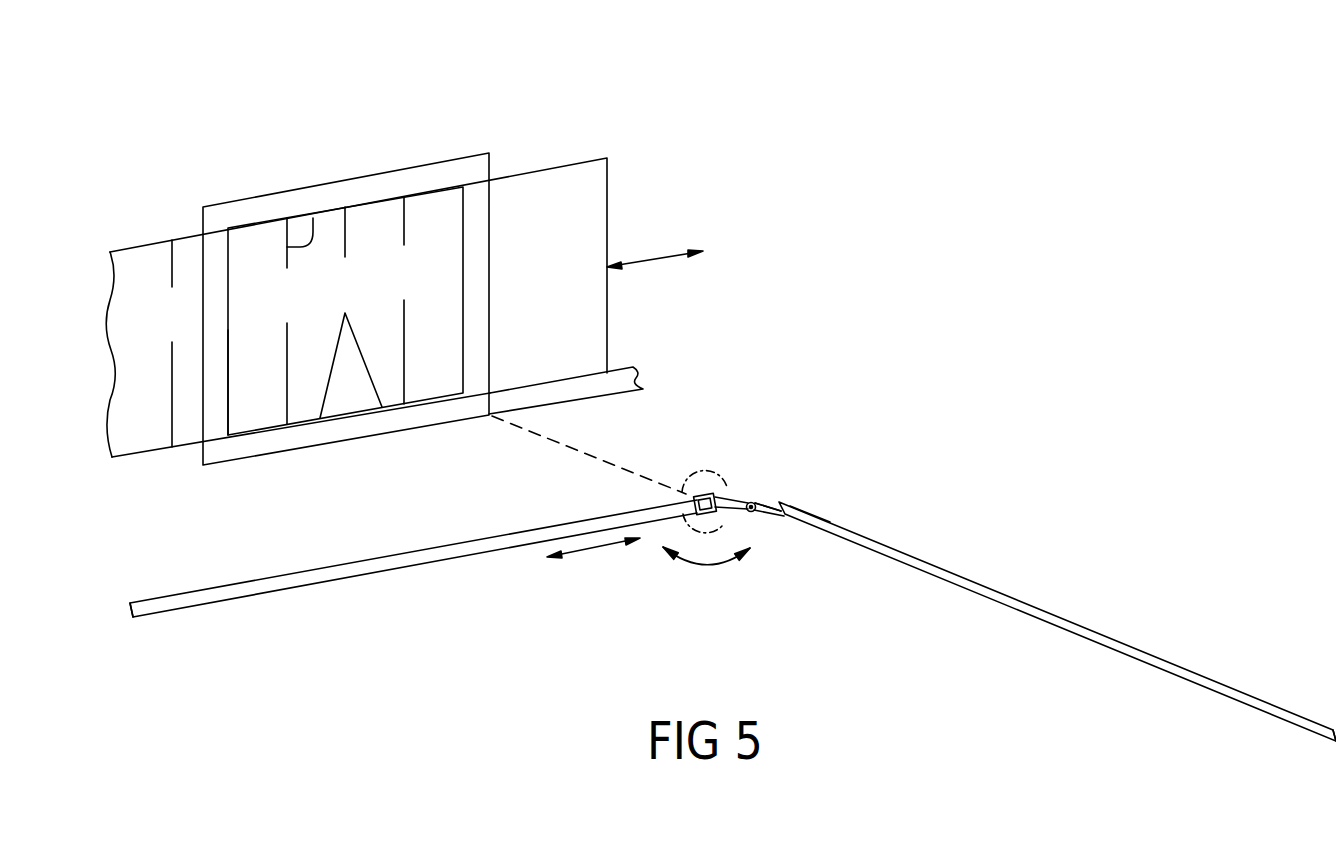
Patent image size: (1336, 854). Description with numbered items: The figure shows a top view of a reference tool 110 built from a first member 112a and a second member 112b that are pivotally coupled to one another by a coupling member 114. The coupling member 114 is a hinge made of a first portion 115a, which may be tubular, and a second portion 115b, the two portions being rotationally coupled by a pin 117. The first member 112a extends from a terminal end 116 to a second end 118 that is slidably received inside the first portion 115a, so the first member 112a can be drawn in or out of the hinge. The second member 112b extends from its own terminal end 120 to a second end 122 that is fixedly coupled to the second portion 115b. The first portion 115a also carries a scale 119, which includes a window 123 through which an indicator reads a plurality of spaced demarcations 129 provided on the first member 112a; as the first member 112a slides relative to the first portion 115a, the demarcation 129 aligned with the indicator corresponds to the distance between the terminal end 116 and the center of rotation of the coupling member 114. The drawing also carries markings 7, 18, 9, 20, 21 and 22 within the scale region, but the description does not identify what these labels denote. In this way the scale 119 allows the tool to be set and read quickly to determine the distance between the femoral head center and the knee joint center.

The panel strip 7 is at (356, 307).
The panel segment 18 is at (170, 343).
The panel segment 9 is at (234, 366).
The panel segment 20 is at (288, 321).
The panel segment with pointer 21 is at (351, 312).
The panel segment 22 is at (404, 300).
The spaced demarcations 129 is at (343, 232).
The window 123 is at (462, 216).
The first portion 115a is at (566, 394).
The second portion 115b is at (770, 503).
The reference tool 110 is at (1163, 388).
The first member 112a is at (282, 572).
The second member 112b is at (1140, 632).
The coupling member 114 is at (772, 490).
The terminal end 116 is at (143, 600).
The pin 117 is at (751, 503).
The second end 118 is at (726, 503).
The scale 119 is at (707, 480).
The terminal end 120 is at (1327, 728).
The second end 122 is at (812, 520).